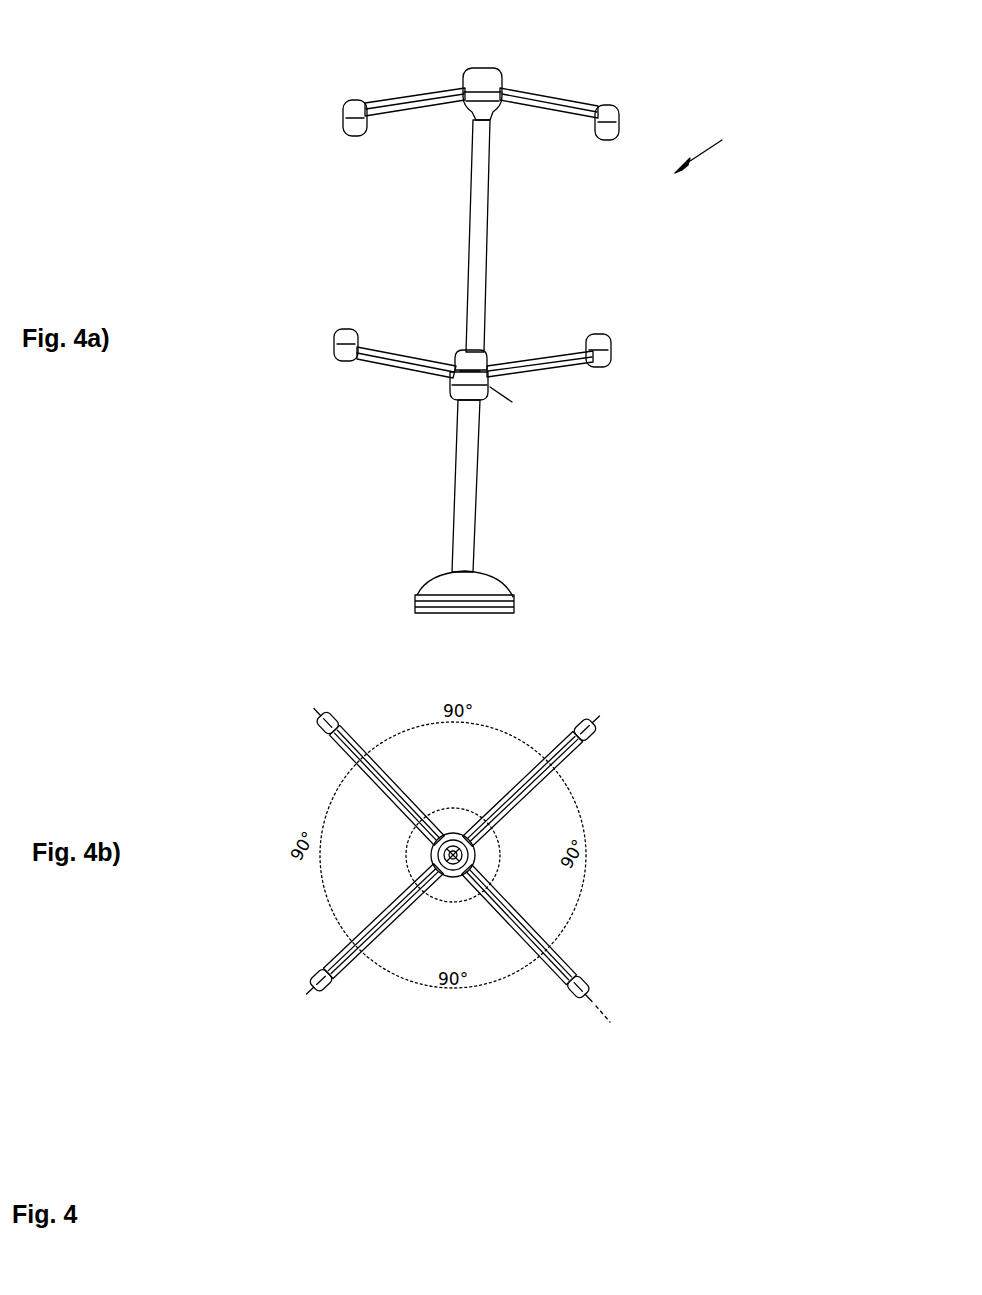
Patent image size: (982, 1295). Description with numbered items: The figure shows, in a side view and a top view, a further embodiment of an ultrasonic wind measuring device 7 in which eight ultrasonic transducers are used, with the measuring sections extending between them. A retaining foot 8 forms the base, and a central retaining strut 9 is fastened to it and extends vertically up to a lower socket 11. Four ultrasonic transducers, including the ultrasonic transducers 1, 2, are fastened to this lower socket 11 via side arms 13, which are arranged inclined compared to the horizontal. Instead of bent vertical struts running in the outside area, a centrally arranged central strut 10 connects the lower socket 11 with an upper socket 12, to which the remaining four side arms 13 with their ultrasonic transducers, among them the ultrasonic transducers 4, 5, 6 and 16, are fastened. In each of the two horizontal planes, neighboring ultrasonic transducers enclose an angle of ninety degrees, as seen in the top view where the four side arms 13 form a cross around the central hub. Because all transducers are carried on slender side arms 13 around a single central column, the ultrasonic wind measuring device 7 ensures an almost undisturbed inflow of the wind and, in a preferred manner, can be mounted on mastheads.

In FIG. 4A, the ultrasonic transducer 1 is at (347, 340).
In FIG. 4A, the ultrasonic transducer 2 is at (603, 345).
In FIG. 4B, the ultrasonic transducer 4 is at (596, 722).
In FIG. 4A, the ultrasonic transducer 5 is at (357, 127).
In FIG. 4B, the ultrasonic transducer 5 is at (308, 995).
In FIG. 4A, the ultrasonic transducer 6 is at (618, 112).
In FIG. 4B, the ultrasonic transducer 6 is at (590, 982).
In FIG. 4A, the ultrasonic wind measuring device 7 is at (713, 147).
In FIG. 4A, the retaining foot 8 is at (480, 590).
In FIG. 4A, the central retaining strut 9 is at (475, 445).
In FIG. 4A, the central strut 10 is at (485, 222).
In FIG. 4A, the lower socket 11 is at (452, 397).
In FIG. 4A, the upper socket 12 is at (492, 73).
In FIG. 4A, the side arm 13 is at (550, 100).
In FIG. 4B, the ultrasonic transducer 16 is at (327, 710).